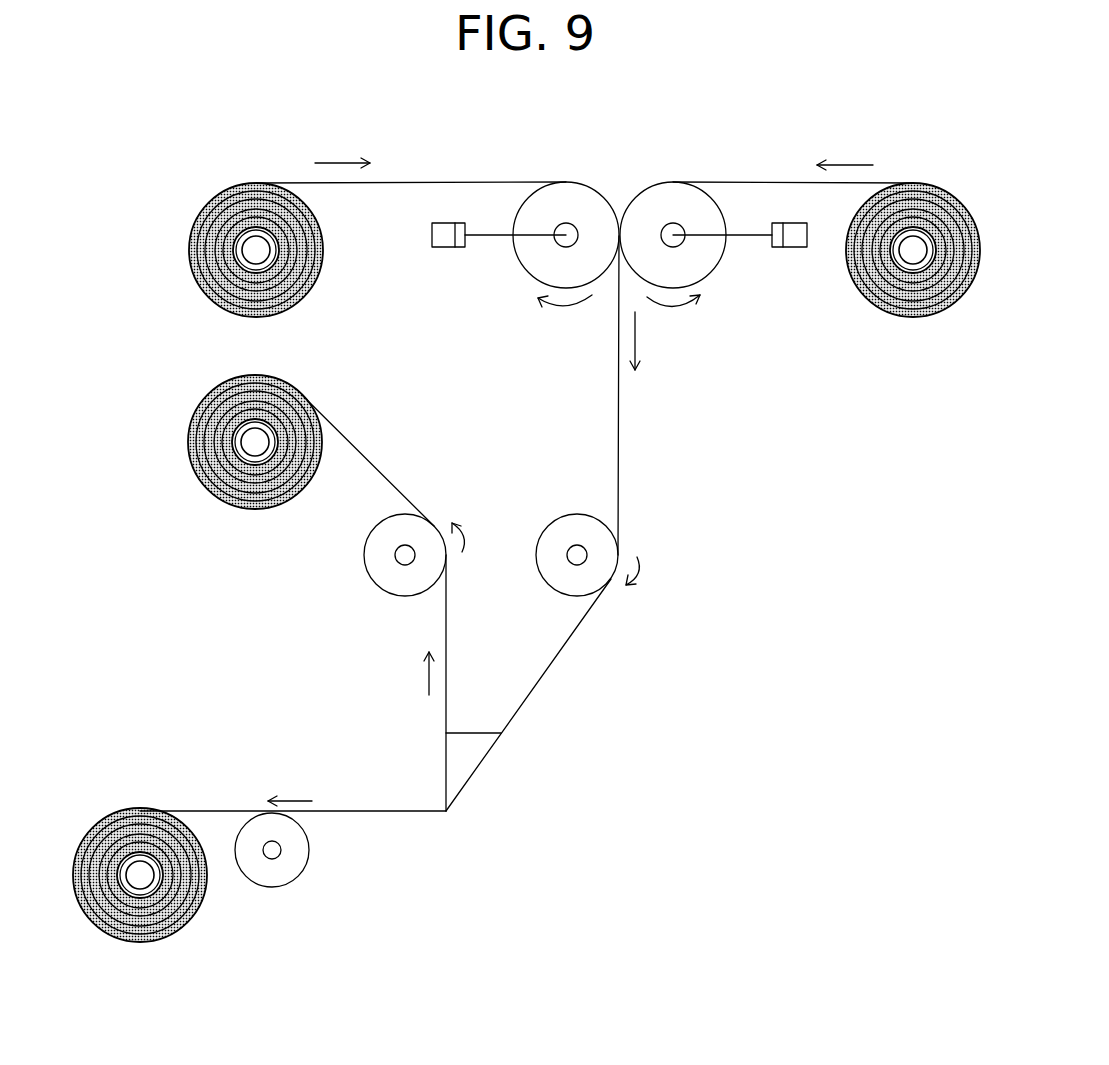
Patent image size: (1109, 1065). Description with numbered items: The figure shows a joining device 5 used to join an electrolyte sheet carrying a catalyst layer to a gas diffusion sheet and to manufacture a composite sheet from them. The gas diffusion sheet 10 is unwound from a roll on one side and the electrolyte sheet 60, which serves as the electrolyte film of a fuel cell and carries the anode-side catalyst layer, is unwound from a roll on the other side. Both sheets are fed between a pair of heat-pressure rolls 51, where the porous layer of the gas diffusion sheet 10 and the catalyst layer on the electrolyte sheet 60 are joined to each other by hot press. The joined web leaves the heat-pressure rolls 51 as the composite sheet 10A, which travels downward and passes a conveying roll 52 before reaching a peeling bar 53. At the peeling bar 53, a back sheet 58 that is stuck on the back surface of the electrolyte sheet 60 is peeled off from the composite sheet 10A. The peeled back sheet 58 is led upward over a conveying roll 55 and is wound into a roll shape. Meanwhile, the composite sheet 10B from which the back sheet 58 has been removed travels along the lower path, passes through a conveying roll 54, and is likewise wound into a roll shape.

The joining device 5 is at (869, 97).
The gas diffusion sheet 10 is at (928, 190).
The composite sheet 10A is at (620, 430).
The composite sheet 10B is at (373, 818).
The heat-pressure rolls 51 is at (542, 270).
The conveying roll 52 is at (562, 530).
The peeling bar 53 is at (460, 766).
The conveying roll 54 is at (275, 870).
The conveying roll 55 is at (405, 590).
The back sheet 58 is at (448, 626).
The electrolyte sheet 60 is at (279, 183).